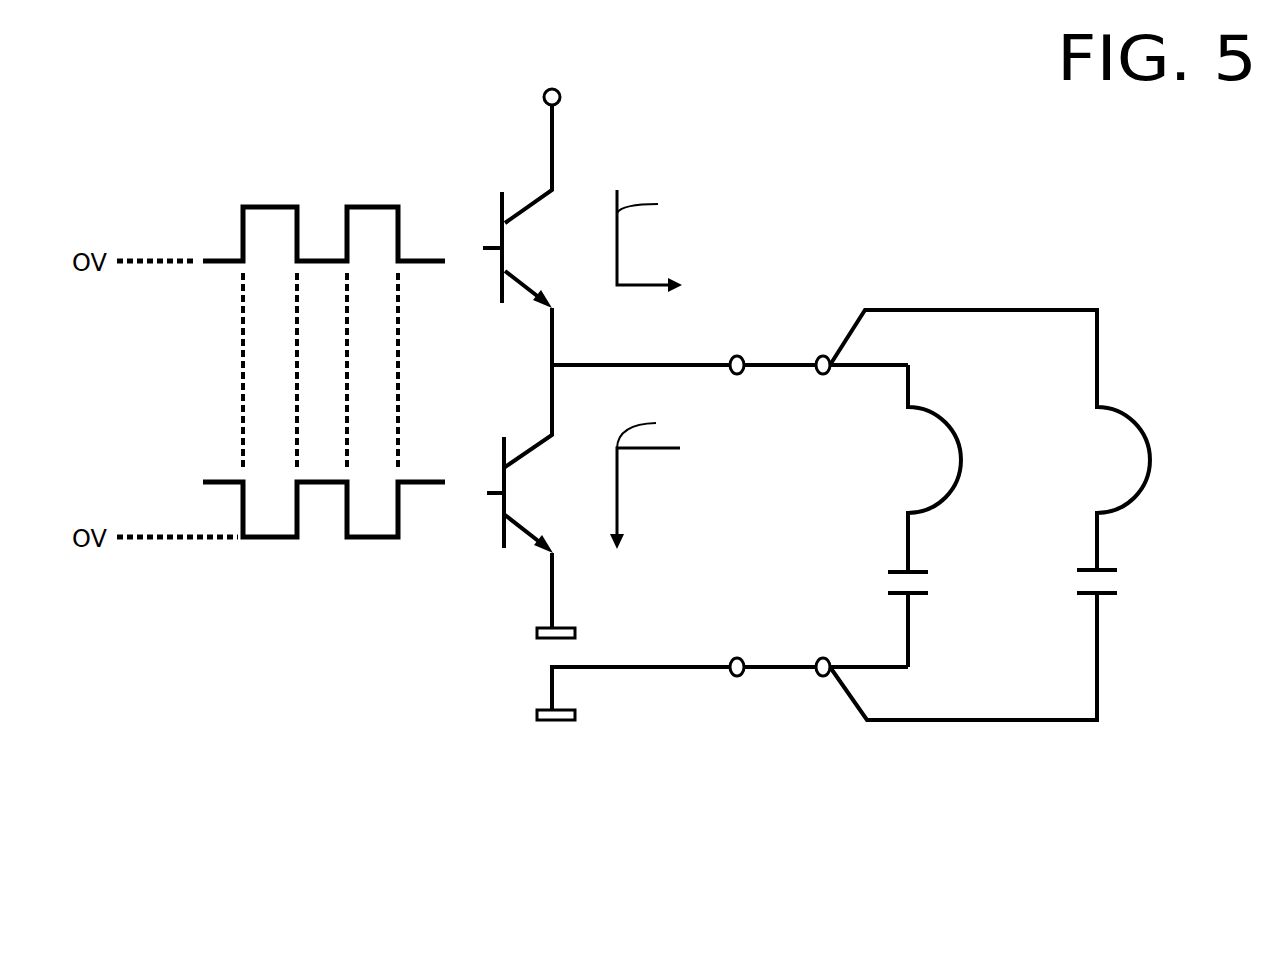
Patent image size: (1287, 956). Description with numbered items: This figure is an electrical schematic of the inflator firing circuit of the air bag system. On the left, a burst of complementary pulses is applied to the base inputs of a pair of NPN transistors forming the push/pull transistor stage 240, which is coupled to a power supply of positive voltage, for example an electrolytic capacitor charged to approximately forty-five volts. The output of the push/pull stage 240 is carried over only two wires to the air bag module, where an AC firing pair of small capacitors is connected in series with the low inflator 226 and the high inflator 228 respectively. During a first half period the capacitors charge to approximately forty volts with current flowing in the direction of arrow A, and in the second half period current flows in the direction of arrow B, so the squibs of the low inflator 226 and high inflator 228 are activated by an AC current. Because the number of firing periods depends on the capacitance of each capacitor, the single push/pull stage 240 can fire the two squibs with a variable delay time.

The push/pull transistor stage 240 is at (700, 192).
The low inflator 226 is at (930, 407).
The high inflator 228 is at (1127, 415).